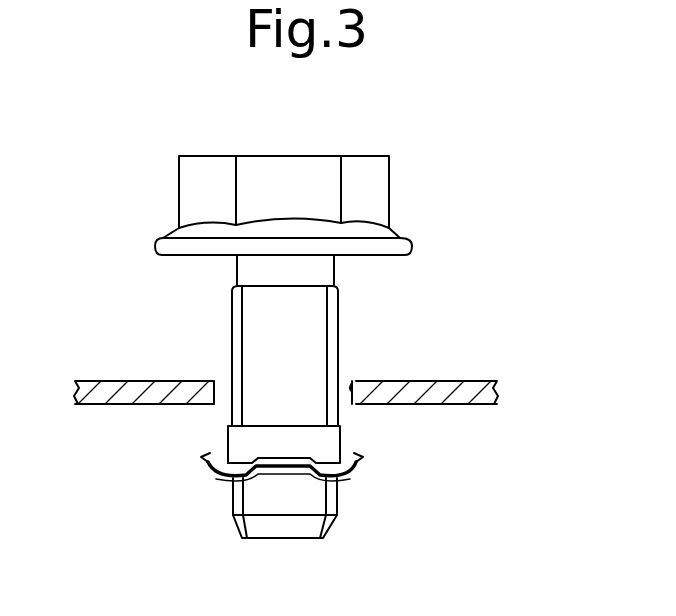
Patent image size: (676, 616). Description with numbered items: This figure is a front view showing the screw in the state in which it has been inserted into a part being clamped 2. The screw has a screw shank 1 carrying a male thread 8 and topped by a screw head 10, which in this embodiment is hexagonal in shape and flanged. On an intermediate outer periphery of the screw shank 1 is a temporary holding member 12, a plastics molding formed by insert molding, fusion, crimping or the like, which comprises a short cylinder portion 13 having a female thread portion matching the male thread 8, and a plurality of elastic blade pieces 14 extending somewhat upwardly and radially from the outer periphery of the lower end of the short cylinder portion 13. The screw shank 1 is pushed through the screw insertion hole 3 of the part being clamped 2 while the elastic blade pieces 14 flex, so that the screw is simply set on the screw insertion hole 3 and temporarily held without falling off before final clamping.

The screw shank 1 is at (272, 350).
The part being clamped 2 is at (458, 380).
The screw insertion hole 3 is at (352, 381).
The male thread 8 is at (330, 335).
The screw head 10 is at (197, 180).
The temporary holding member 12 is at (330, 452).
The short cylinder portion 13 is at (248, 446).
The elastic blade pieces 14 is at (225, 468).